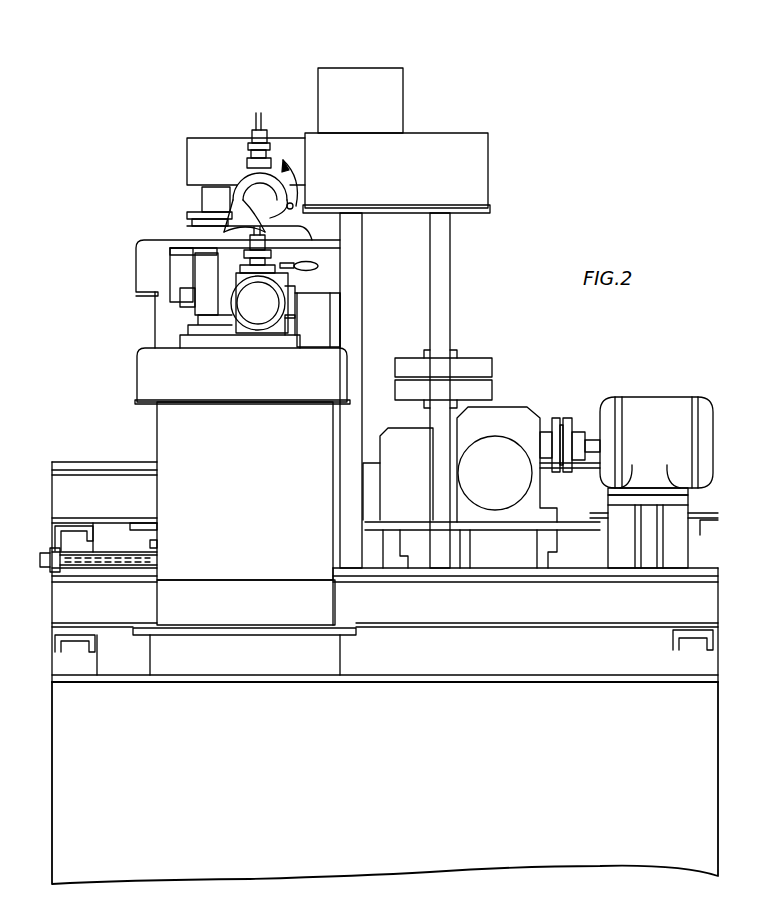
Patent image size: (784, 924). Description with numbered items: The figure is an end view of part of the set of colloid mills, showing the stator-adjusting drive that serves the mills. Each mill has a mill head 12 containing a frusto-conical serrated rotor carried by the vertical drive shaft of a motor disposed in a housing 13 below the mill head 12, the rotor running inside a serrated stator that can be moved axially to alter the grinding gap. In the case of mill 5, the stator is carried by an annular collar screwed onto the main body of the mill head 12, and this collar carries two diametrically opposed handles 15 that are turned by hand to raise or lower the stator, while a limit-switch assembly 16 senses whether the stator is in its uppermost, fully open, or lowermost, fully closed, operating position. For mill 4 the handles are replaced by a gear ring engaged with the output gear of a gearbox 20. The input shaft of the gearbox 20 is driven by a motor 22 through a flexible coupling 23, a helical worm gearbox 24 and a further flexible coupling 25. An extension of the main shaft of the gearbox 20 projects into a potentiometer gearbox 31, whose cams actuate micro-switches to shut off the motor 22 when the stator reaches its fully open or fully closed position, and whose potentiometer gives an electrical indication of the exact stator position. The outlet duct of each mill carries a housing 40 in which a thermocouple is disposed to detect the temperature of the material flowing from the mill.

The mill 4 is at (134, 245).
The mill 5 is at (132, 375).
The mill head 12 is at (200, 197).
The housing 13 is at (158, 325).
The handles 15 is at (320, 266).
The limit-switch assembly 16 is at (188, 298).
The gearbox 20 is at (411, 185).
The motor 22 is at (663, 437).
The flexible coupling 23 is at (566, 413).
The helical worm gearbox 24 is at (509, 420).
The further flexible coupling 25 is at (494, 368).
The potentiometer gearbox 31 is at (351, 85).
The housing 40 is at (254, 128).